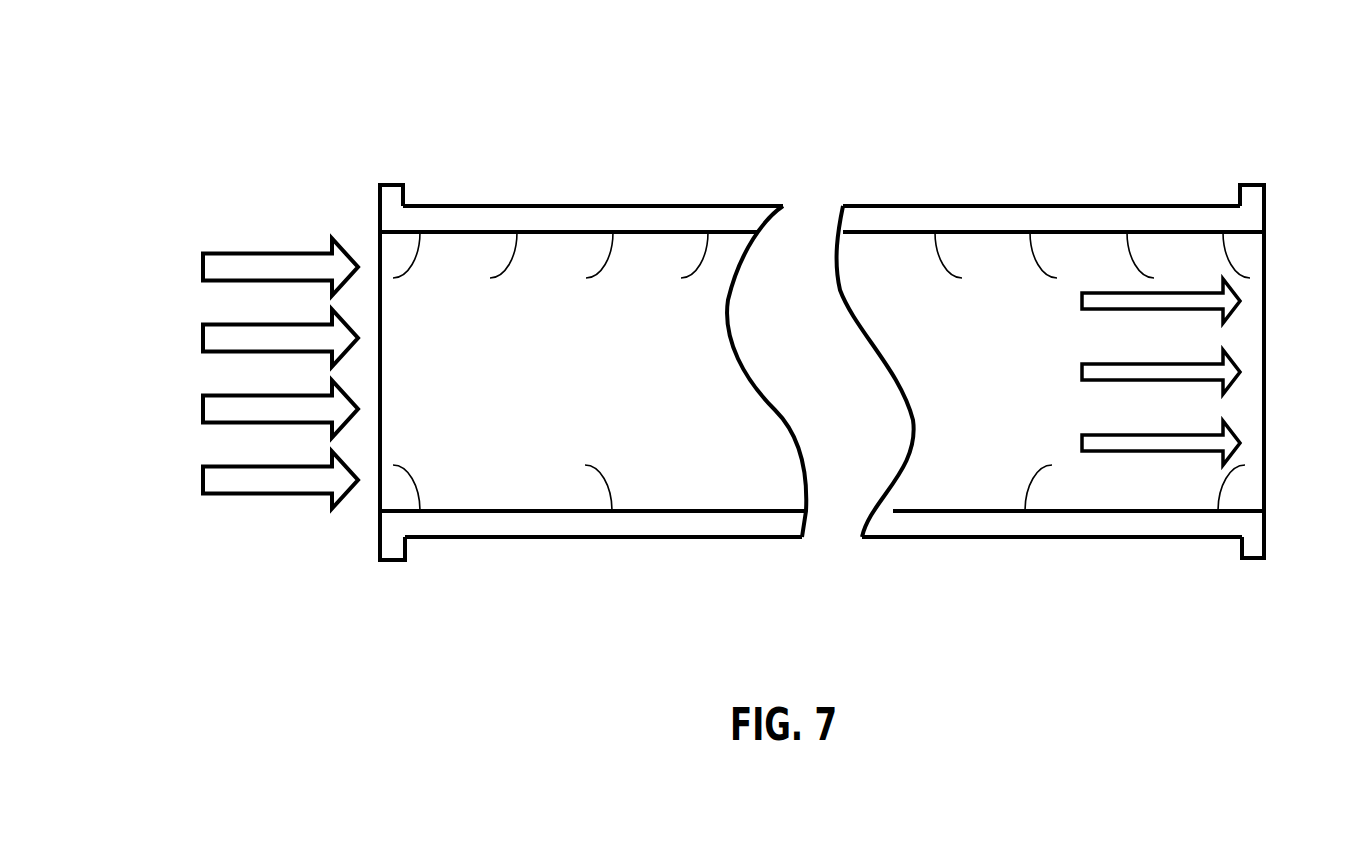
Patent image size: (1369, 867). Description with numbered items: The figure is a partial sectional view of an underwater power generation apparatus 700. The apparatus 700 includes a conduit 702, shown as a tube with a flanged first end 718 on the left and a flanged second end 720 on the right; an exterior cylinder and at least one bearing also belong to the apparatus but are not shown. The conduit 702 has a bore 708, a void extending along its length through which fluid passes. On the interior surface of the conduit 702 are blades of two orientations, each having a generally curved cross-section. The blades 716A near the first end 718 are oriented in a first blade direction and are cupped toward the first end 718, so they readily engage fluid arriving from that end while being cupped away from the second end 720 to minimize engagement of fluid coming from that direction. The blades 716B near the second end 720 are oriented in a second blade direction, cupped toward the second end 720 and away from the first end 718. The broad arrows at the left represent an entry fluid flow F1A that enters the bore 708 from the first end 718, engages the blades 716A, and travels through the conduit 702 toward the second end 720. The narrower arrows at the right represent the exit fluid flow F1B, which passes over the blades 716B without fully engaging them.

The underwater power generation apparatus 700 is at (738, 90).
The conduit 702 is at (1073, 222).
The bore 708 is at (530, 420).
The blade 716A is at (603, 262).
The blade 716B is at (1230, 265).
The first end 718 is at (329, 174).
The second end 720 is at (1327, 175).
The entry fluid flow F1A is at (251, 374).
The exit fluid flow F1B is at (1128, 372).